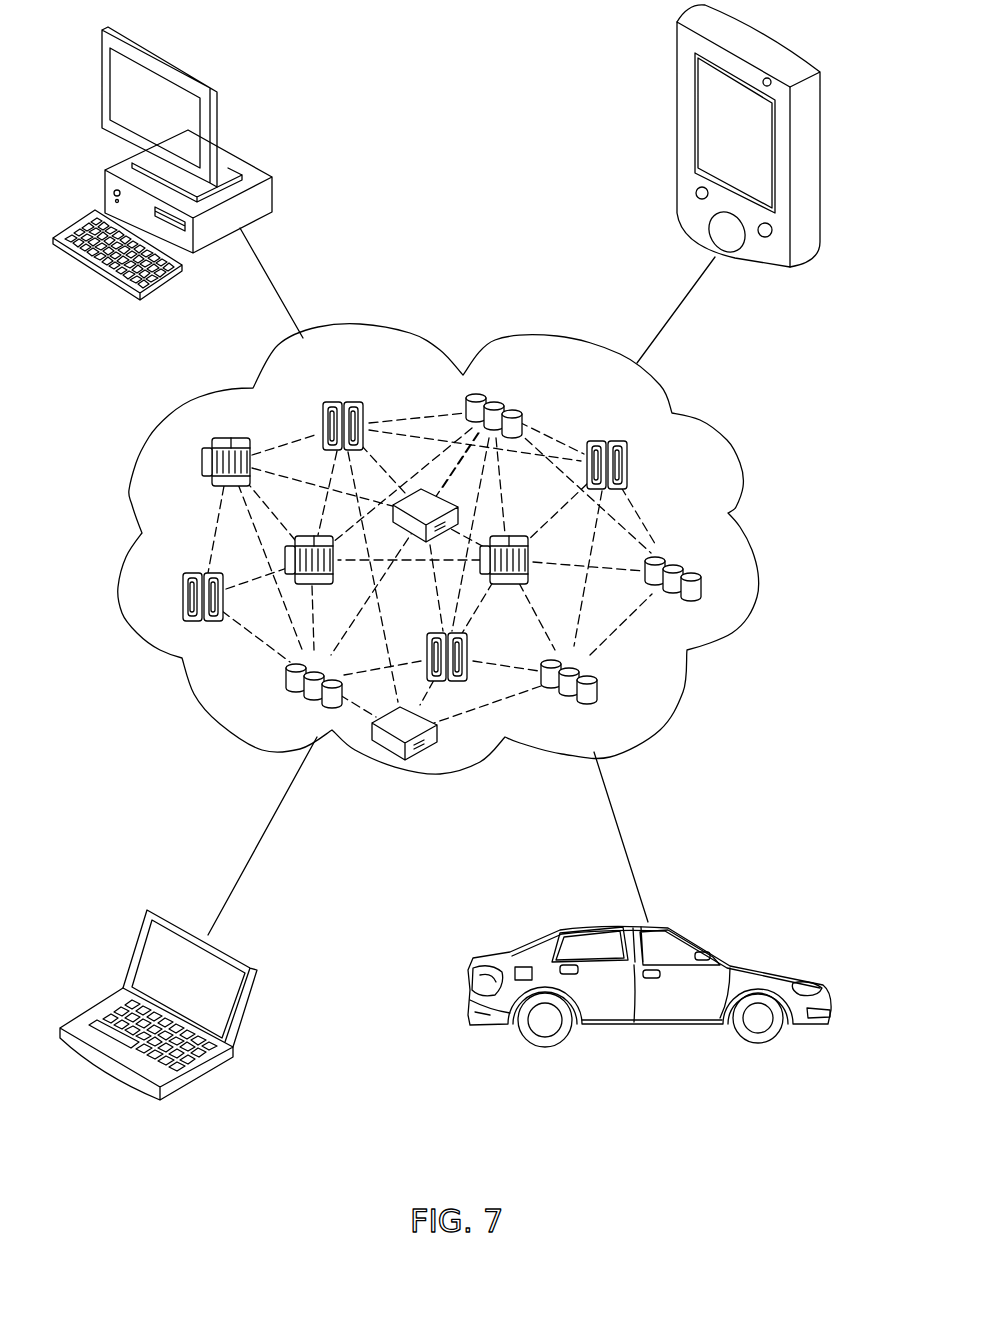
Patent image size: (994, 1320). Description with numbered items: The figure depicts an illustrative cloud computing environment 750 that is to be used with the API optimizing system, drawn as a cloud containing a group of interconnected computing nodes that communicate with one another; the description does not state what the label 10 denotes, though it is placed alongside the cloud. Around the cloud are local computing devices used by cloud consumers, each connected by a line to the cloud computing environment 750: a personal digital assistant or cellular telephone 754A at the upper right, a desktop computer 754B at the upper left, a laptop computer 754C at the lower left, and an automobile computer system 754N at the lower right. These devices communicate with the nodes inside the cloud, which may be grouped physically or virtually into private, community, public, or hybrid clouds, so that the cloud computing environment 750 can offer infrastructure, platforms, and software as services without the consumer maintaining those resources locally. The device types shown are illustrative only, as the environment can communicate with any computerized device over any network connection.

The computing system / network of servers 10 is at (673, 488).
The cloud computing environment 750 is at (732, 630).
The personal digital assistant (PDA) or cellular telephone 754A is at (677, 87).
The desktop computer 754B is at (273, 190).
The laptop computer 754C is at (257, 980).
The automobile computer system 754N is at (833, 987).